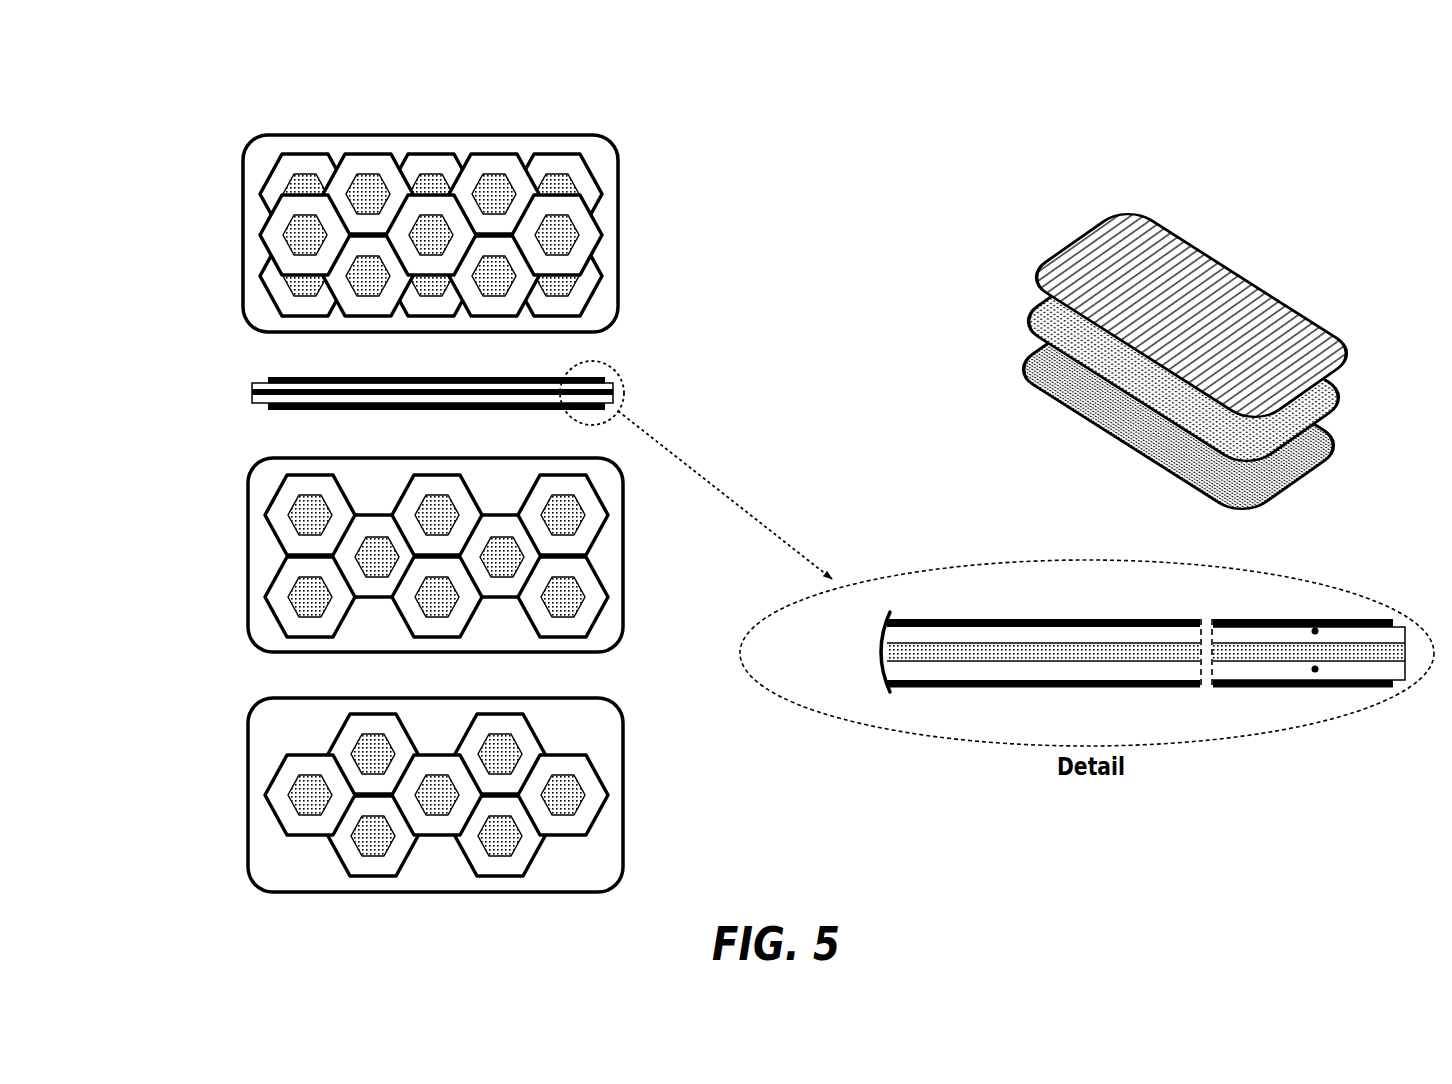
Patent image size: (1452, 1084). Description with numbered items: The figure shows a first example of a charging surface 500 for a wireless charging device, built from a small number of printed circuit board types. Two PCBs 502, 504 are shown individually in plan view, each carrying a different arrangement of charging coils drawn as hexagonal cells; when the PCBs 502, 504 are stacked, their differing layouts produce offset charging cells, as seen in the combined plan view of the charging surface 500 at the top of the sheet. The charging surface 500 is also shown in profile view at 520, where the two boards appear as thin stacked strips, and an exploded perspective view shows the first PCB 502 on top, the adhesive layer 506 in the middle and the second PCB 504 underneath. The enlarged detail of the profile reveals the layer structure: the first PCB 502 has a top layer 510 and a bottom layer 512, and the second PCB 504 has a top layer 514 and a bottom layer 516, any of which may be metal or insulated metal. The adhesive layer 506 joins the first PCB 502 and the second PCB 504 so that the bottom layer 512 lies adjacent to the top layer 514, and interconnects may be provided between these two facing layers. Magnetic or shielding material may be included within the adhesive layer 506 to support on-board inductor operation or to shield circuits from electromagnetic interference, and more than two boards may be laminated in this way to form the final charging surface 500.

The charging surface 500 is at (126, 75).
The first PCB 502 is at (255, 466).
The second PCB 504 is at (255, 706).
The adhesive layer 506 is at (1009, 320).
The top layer 510 is at (1081, 609).
The bottom layer 512 is at (1315, 627).
The top layer 514 is at (1315, 674).
The bottom layer 516 is at (1083, 694).
The profile view 520 is at (184, 393).